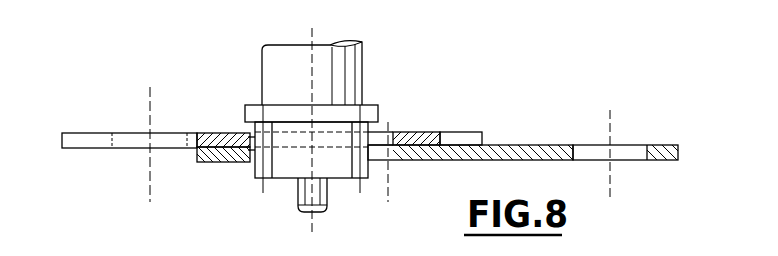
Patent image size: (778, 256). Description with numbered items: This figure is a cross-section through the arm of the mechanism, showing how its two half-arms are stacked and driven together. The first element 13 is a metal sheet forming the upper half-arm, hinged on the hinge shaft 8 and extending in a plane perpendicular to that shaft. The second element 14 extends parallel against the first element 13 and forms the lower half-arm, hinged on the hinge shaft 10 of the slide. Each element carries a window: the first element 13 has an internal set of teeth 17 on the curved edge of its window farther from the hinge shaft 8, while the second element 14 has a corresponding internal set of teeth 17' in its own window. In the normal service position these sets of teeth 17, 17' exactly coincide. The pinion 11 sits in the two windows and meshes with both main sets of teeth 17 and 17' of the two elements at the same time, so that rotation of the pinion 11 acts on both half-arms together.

The hinge shaft 8 is at (623, 148).
The hinge shaft of the slide 10 is at (132, 150).
The pinion 11 is at (327, 140).
The first element 13 is at (517, 148).
The second element 14 is at (95, 140).
The internal set of teeth 17 is at (221, 194).
The internal set of teeth 17' is at (206, 111).